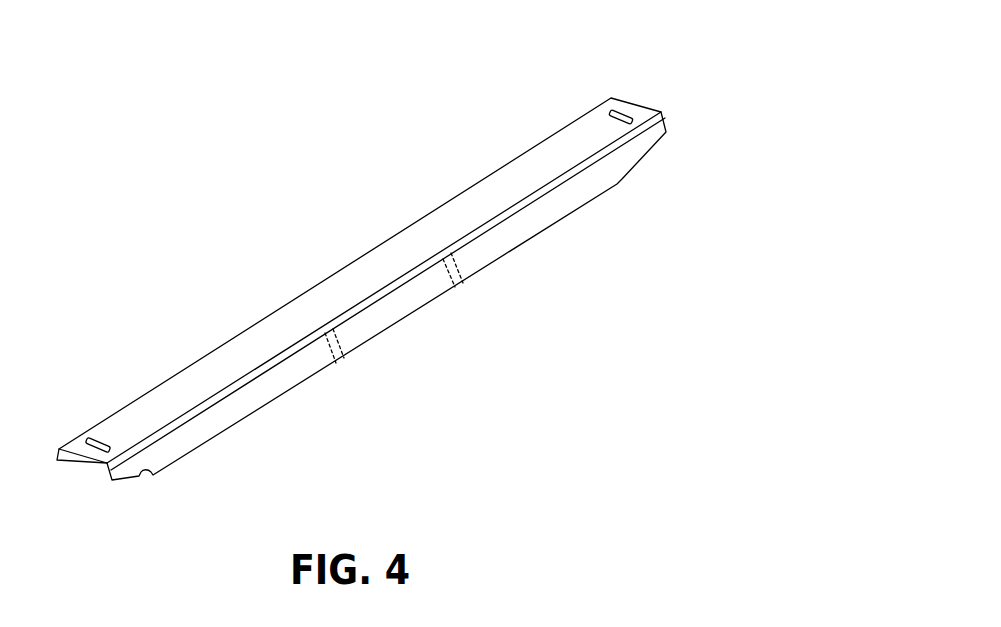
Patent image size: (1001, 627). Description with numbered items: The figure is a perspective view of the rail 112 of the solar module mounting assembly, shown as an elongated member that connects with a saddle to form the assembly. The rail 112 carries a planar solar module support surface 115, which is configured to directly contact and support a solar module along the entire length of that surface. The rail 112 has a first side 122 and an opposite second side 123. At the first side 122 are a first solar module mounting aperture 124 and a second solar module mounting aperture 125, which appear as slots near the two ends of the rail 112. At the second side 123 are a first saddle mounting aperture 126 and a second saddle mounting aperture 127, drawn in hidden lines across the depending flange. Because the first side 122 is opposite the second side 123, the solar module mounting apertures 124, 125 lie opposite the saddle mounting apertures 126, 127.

The rail 112 is at (352, 261).
The solar module support surface 115 is at (481, 212).
The first side 122 is at (352, 256).
The second side 123 is at (386, 296).
The first solar module mounting aperture 124 is at (609, 90).
The second solar module mounting aperture 125 is at (93, 425).
The first saddle mounting aperture 126 is at (465, 298).
The second saddle mounting aperture 127 is at (346, 369).